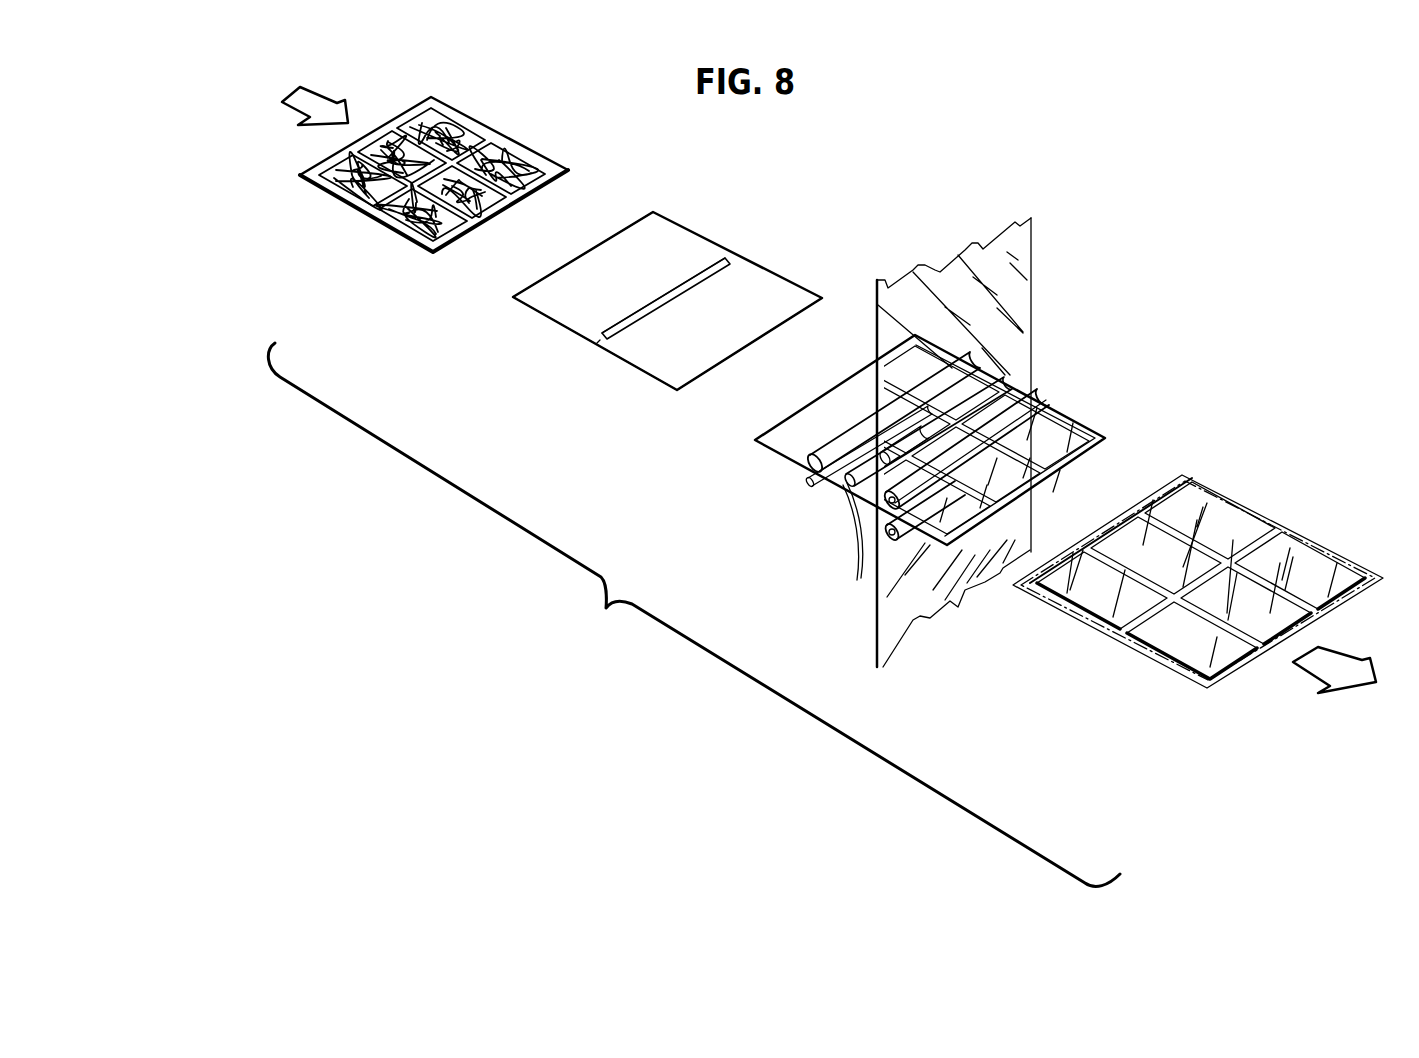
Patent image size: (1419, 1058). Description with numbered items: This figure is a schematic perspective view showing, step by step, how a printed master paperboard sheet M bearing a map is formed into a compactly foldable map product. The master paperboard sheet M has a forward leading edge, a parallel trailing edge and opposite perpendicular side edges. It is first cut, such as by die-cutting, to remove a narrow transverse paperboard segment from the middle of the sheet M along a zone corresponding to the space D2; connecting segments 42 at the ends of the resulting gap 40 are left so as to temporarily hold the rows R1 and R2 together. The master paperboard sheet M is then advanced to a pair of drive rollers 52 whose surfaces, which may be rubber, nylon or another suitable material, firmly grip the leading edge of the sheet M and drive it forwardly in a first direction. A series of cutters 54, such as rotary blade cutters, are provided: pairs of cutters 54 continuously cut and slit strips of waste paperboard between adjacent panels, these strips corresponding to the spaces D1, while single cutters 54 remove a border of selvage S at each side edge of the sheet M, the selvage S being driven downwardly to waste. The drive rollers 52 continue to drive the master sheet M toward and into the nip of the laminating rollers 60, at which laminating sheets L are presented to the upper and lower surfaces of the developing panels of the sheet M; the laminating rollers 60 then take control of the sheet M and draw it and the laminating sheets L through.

The master paperboard sheet M is at (372, 233).
The gap 40 is at (700, 272).
The connecting segments 42 is at (728, 260).
The row R1 is at (566, 333).
The row R2 is at (660, 385).
The drive rollers 52 is at (832, 447).
The cutters 54 is at (918, 443).
The laminating rollers 60 is at (1047, 394).
The laminating sheets L is at (1020, 297).
The selvage S is at (857, 560).
The spaces D1 is at (1183, 520).
The space D2 is at (1262, 522).